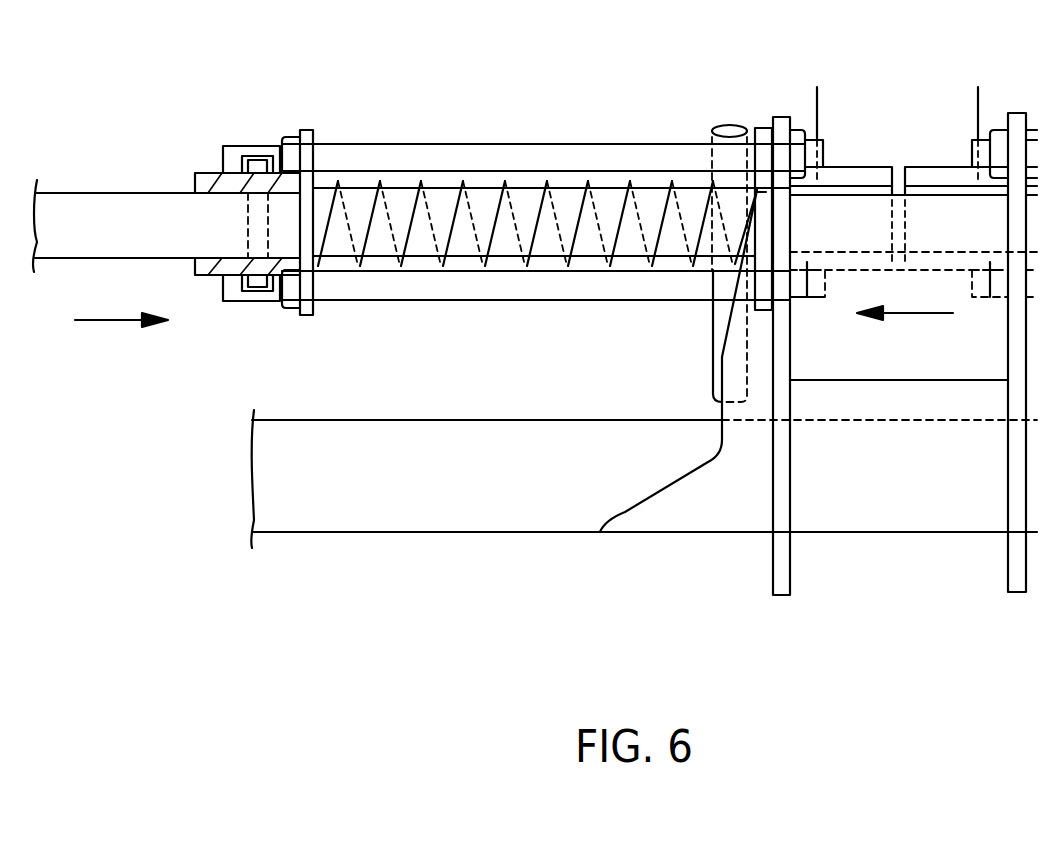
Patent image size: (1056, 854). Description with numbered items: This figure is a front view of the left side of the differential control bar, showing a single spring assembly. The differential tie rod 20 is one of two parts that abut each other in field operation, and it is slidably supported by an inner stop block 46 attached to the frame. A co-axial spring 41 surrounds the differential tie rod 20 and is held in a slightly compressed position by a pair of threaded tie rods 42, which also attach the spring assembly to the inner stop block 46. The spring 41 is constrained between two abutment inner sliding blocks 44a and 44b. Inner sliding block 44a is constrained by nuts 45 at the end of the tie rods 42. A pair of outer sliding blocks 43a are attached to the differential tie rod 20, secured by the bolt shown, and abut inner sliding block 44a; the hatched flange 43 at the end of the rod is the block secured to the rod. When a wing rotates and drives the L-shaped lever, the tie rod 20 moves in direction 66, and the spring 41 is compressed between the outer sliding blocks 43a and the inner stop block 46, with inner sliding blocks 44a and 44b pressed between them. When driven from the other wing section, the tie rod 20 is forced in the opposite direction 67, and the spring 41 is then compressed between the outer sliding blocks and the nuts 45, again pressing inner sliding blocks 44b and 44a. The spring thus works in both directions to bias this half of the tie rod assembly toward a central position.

The differential tie rod 20 is at (127, 195).
The co-axial spring 41 is at (504, 188).
The threaded tie rods 42 is at (378, 152).
The flange 43 is at (210, 264).
The outer sliding blocks 43a is at (867, 177).
The inner sliding block 44a is at (313, 316).
The inner sliding block 44b is at (762, 312).
The nuts 45 is at (292, 160).
The inner stop block 46 is at (783, 200).
The direction 66 is at (104, 322).
The direction 67 is at (905, 316).